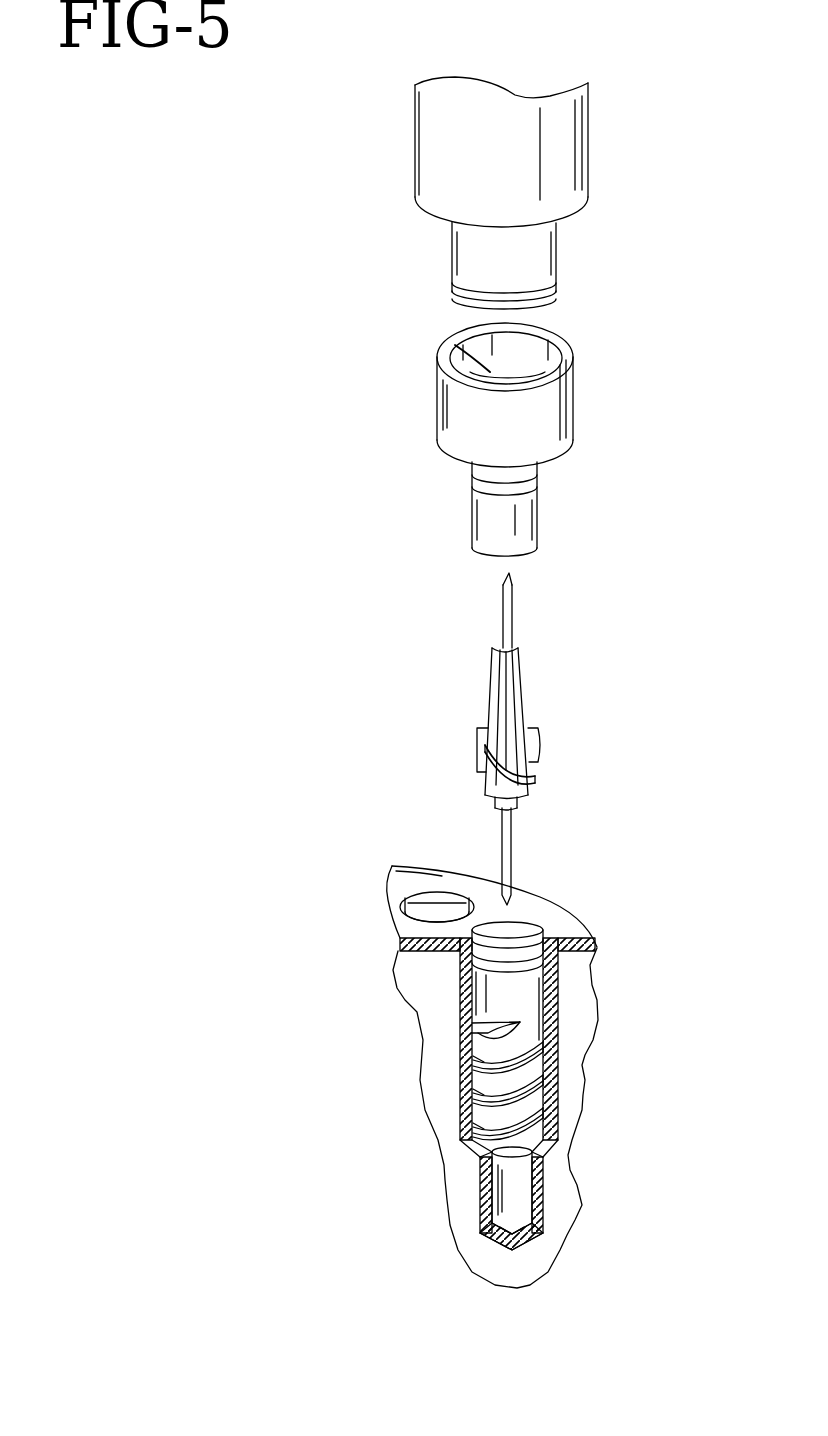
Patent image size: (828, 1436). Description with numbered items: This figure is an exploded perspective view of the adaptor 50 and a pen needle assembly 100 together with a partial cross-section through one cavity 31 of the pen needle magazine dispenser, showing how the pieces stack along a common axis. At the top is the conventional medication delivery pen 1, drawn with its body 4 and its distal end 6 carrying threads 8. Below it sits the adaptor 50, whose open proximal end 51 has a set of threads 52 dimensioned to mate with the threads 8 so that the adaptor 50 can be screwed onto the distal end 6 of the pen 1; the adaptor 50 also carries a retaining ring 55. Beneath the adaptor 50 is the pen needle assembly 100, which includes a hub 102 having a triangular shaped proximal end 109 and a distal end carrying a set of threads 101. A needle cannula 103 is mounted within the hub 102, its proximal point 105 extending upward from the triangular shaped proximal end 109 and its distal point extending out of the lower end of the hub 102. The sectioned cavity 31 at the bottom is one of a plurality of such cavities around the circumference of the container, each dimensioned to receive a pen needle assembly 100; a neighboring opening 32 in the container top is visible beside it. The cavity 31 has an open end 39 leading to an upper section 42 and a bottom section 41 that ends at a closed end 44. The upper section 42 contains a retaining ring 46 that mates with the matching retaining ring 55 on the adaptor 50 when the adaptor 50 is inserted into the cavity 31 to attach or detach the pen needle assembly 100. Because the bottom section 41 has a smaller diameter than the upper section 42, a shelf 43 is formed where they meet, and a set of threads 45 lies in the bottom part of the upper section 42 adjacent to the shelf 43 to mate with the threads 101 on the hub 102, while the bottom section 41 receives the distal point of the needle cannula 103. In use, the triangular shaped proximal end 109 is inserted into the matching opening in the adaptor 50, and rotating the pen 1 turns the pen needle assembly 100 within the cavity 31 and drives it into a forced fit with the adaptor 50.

The medication delivery pen 1 is at (362, 163).
The cartridge holder body 4 is at (588, 167).
The distal end 6 is at (556, 233).
The threads 8 is at (556, 270).
The adaptor 50 is at (510, 432).
The open proximal end 51 is at (525, 350).
The threads 52 is at (452, 346).
The retaining ring 55 is at (472, 484).
The pen needle assembly 100 is at (533, 720).
The proximal point 105 is at (512, 573).
The triangular shaped proximal end 109 is at (512, 680).
The hub 102 is at (526, 710).
The threads 101 is at (538, 765).
The needle cannula 103 is at (508, 816).
The hole in base plate 32 is at (422, 875).
The open end 39 is at (528, 932).
The retaining ring 46 is at (558, 978).
The cavity 31 is at (528, 1013).
The upper section 42 is at (470, 1010).
The threads 45 is at (553, 1088).
The shelf 43 is at (482, 1152).
The bottom section 41 is at (517, 1185).
The closed end 44 is at (505, 1236).